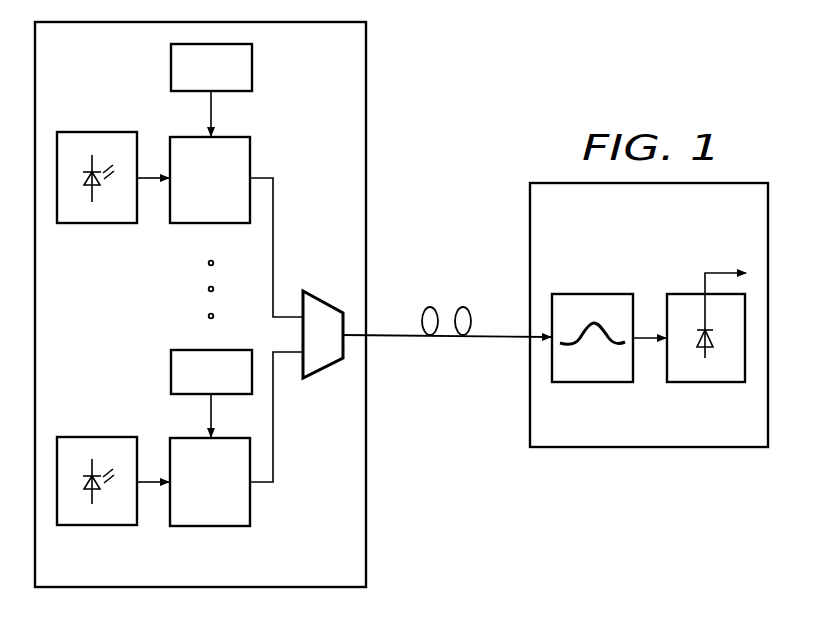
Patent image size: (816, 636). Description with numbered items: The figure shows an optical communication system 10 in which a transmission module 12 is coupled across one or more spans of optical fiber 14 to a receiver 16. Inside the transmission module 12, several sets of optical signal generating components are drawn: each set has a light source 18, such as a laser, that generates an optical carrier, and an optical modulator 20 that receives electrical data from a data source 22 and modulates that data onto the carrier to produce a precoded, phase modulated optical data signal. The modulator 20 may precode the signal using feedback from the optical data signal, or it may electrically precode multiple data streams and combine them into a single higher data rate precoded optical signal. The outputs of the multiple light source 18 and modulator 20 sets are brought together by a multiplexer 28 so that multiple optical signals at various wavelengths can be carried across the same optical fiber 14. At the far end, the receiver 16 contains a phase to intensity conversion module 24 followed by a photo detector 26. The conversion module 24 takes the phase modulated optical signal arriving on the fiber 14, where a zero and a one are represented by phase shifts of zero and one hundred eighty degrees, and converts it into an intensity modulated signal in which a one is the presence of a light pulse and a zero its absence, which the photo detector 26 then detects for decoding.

The optical communication system 10 is at (572, 536).
The transmission module 12 is at (88, 106).
The optical fiber 14 is at (393, 336).
The receiver 16 is at (666, 268).
The light source 18 is at (97, 223).
The optical modulator 20 is at (190, 223).
The data source 22 is at (252, 65).
The phase to intensity conversion module 24 is at (592, 382).
The photo detector 26 is at (705, 382).
The multiplexer 28 is at (324, 299).